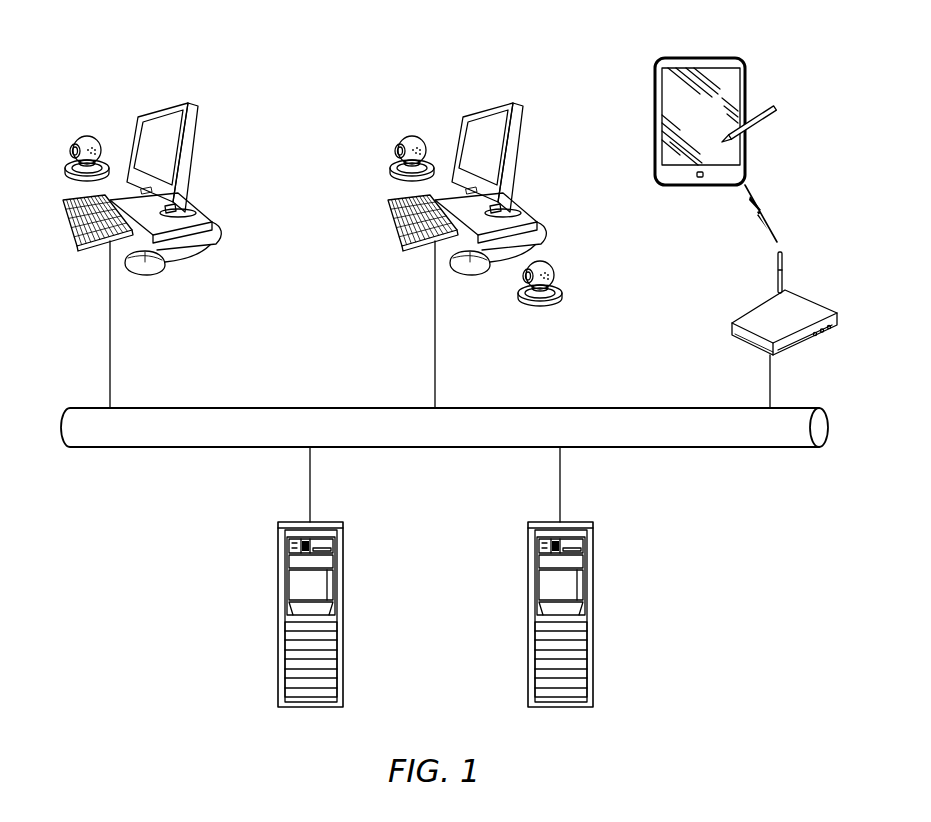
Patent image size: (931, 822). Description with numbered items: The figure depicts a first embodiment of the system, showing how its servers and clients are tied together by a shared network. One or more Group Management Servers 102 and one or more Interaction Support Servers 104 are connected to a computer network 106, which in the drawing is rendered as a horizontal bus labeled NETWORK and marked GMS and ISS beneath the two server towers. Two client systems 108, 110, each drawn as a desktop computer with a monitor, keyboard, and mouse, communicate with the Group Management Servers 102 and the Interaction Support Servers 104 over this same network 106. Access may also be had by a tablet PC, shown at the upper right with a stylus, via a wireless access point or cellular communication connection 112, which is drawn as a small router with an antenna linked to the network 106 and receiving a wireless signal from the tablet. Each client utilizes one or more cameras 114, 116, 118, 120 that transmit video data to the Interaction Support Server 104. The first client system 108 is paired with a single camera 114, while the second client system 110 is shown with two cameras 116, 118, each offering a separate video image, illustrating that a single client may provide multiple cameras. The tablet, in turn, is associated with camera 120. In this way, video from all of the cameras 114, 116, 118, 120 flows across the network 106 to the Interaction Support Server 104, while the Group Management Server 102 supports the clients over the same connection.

The Group Management Server 102 is at (278, 615).
The Interaction Support Server 104 is at (592, 615).
The computer network 106 is at (463, 447).
The client system 108 is at (193, 160).
The client system 110 is at (518, 160).
The wireless access point 112 is at (803, 295).
The camera 114 is at (93, 137).
The camera 116 is at (418, 137).
The camera 118 is at (565, 288).
The camera 120 is at (703, 58).